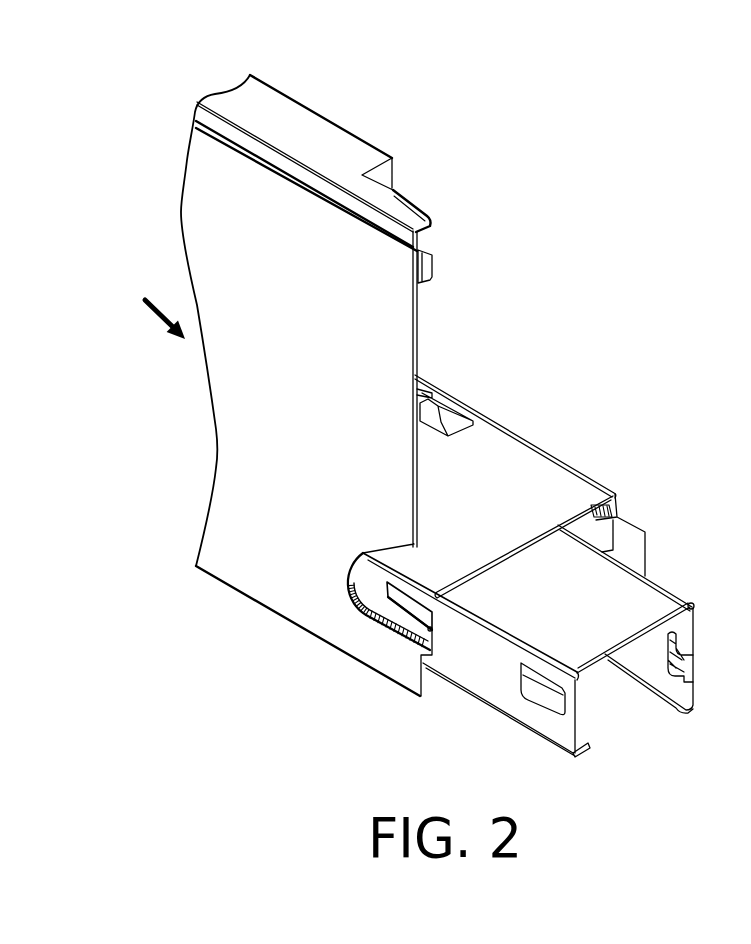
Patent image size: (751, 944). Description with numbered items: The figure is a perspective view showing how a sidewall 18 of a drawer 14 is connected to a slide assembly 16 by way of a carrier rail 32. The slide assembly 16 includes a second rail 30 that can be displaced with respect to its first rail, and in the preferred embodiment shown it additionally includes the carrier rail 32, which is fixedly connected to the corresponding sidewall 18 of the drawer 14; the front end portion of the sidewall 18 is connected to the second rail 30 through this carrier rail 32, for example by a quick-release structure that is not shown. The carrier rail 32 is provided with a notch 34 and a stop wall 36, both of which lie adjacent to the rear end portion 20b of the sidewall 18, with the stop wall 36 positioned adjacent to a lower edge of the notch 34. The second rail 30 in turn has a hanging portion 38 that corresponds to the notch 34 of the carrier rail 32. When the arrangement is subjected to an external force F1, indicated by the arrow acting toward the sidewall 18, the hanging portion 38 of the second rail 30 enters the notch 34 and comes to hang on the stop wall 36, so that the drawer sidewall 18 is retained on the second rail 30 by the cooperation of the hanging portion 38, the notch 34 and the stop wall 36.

The drawer 14 is at (266, 616).
The sidewall 18 is at (332, 114).
The rear end portion 20b is at (398, 318).
The slide assembly 16 is at (505, 416).
The carrier rail 32 is at (557, 460).
The second rail 30 is at (665, 606).
The notch 34 is at (407, 598).
The stop wall 36 is at (413, 620).
The hanging portion 38 is at (540, 694).
The external force F1 is at (146, 308).